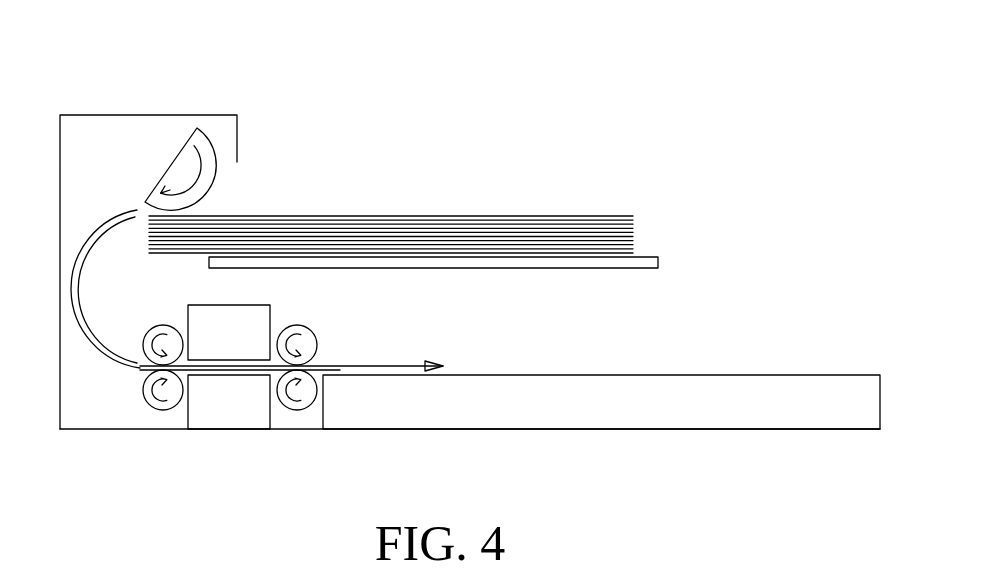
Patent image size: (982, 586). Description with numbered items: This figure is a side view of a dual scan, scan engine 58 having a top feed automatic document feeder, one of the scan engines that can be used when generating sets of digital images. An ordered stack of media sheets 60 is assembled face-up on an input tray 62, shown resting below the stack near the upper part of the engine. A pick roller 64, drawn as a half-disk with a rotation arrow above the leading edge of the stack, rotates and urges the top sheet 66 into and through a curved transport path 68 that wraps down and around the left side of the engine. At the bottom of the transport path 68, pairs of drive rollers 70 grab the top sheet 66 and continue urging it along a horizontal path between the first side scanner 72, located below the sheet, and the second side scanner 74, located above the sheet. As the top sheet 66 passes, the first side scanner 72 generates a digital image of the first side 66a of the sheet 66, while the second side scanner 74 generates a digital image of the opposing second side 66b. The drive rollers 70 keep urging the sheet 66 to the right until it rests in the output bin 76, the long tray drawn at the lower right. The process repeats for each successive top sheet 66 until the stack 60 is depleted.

The scan engine 58 is at (55, 84).
The stack of media sheets 60 is at (386, 285).
The input tray 62 is at (657, 263).
The pick roller 64 is at (186, 148).
The top sheet 66 is at (227, 215).
The first side 66a is at (343, 215).
The second side 66b is at (193, 362).
The transport path 68 is at (78, 310).
The drive rollers 70 is at (142, 388).
The first side scanner 72 is at (245, 422).
The second side scanner 74 is at (247, 312).
The output bin 76 is at (598, 382).